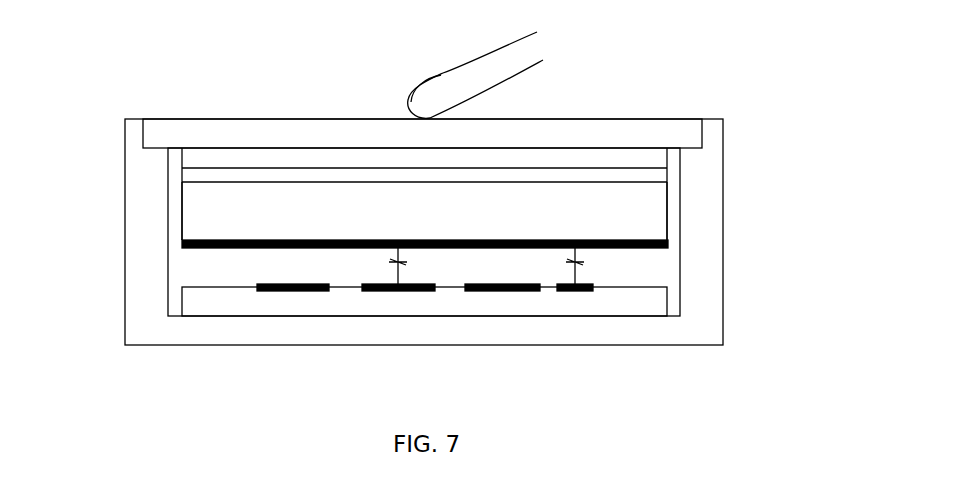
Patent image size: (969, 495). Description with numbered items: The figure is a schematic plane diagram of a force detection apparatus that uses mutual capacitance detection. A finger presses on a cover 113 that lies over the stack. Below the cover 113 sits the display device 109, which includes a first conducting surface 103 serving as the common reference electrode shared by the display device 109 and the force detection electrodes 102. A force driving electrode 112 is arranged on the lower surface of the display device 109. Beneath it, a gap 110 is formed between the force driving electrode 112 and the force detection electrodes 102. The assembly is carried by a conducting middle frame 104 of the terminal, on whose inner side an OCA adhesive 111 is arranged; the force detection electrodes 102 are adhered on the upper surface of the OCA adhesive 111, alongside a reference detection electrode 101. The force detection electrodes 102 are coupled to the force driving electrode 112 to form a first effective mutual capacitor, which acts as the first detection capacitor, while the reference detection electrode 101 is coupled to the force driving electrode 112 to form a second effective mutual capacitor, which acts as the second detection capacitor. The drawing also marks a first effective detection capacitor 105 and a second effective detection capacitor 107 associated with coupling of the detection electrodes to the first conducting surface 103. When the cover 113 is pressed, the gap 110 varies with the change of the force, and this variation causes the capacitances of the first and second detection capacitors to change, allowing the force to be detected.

The reference detection electrode 101 is at (573, 291).
The force detection electrodes 102 is at (298, 291).
The first conducting surface 103 is at (197, 175).
The conducting middle frame 104 is at (703, 335).
The first effective detection capacitor 105 is at (407, 262).
The second effective detection capacitor 107 is at (566, 262).
The display device 109 is at (197, 223).
The gap 110 is at (640, 263).
The OCA adhesive 111 is at (240, 308).
The force driving electrode 112 is at (185, 247).
The cover 113 is at (652, 130).